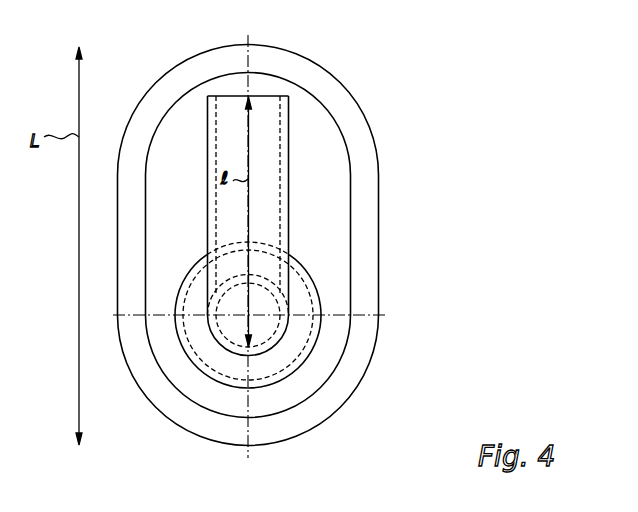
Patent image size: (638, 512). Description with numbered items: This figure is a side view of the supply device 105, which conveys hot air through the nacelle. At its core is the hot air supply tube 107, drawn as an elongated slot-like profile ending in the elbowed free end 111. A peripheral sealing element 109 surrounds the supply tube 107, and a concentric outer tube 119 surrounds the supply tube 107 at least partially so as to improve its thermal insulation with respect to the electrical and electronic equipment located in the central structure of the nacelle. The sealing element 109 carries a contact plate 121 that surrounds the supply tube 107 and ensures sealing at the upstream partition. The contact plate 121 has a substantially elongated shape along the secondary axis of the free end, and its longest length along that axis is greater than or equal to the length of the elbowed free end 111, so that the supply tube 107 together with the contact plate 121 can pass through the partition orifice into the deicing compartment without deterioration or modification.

The supply device 105 is at (386, 216).
The contact plate 121 is at (335, 246).
The free end 111 is at (270, 105).
The hot air supply tube 107 is at (259, 153).
The peripheral sealing element 109 is at (331, 278).
The concentric outer tube 119 is at (312, 350).